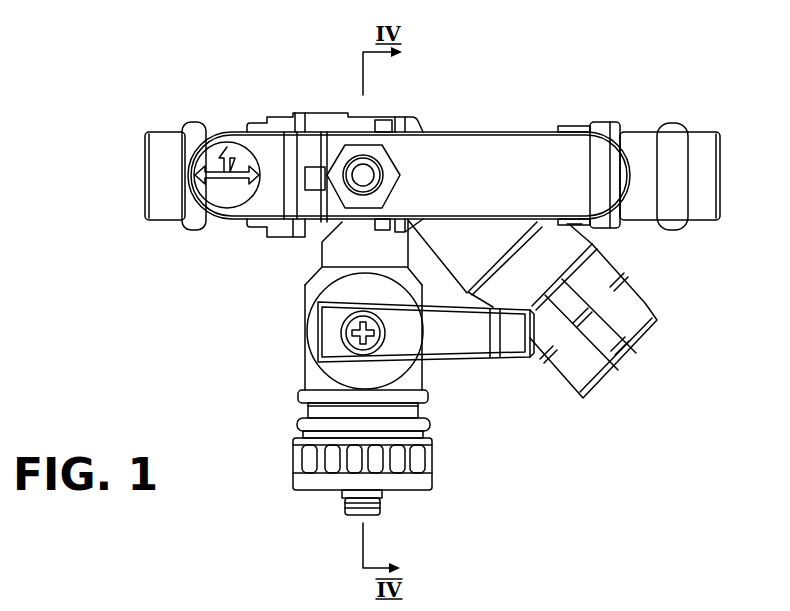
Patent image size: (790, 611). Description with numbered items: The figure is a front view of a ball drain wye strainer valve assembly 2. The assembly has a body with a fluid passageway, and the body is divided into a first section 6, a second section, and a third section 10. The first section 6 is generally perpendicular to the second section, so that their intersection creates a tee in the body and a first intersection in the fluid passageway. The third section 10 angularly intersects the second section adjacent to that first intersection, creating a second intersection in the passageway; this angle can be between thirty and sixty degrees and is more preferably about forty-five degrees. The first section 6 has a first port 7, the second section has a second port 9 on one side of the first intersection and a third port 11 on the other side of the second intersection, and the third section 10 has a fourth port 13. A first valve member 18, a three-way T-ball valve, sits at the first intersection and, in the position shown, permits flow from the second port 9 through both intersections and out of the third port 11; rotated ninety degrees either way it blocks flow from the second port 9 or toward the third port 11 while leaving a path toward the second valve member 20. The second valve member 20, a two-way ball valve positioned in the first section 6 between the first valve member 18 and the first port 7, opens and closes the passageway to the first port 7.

The ball drain wye strainer valve assembly 2 is at (451, 128).
The first section 6 is at (325, 275).
The first port 7 is at (310, 378).
The second port 9 is at (283, 117).
The third section 10 is at (548, 243).
The third port 11 is at (648, 140).
The fourth port 13 is at (490, 298).
The first valve member 18 is at (397, 145).
The second valve member 20 is at (325, 332).